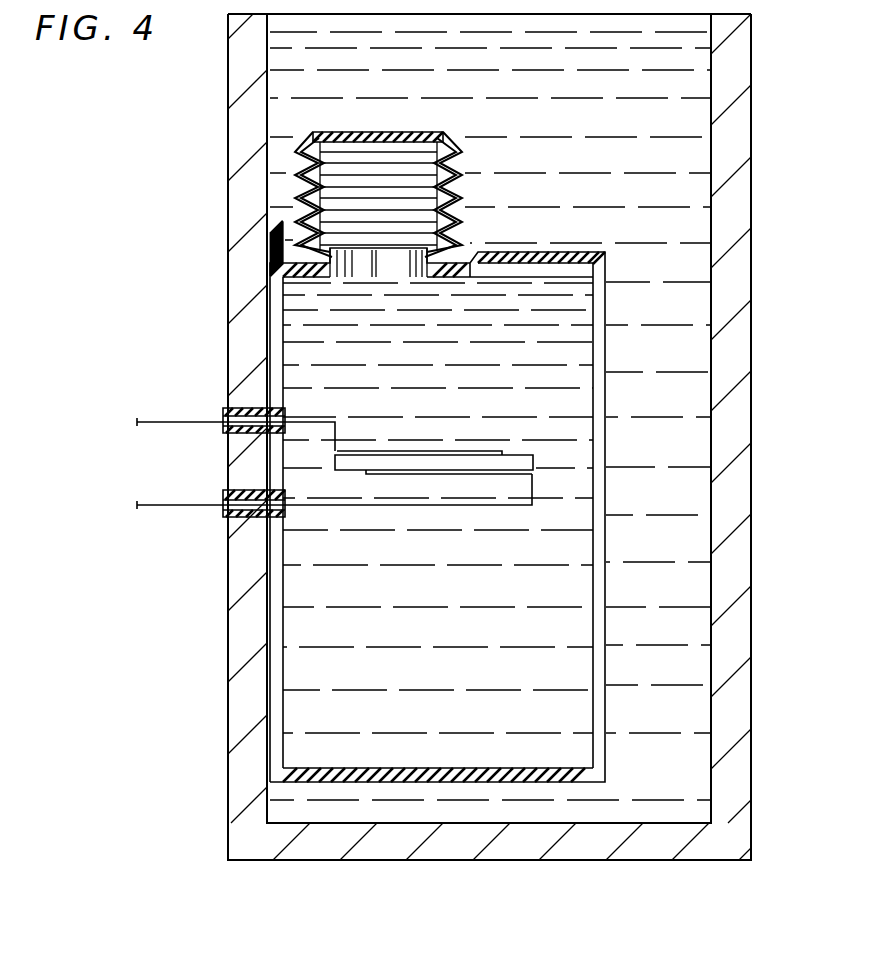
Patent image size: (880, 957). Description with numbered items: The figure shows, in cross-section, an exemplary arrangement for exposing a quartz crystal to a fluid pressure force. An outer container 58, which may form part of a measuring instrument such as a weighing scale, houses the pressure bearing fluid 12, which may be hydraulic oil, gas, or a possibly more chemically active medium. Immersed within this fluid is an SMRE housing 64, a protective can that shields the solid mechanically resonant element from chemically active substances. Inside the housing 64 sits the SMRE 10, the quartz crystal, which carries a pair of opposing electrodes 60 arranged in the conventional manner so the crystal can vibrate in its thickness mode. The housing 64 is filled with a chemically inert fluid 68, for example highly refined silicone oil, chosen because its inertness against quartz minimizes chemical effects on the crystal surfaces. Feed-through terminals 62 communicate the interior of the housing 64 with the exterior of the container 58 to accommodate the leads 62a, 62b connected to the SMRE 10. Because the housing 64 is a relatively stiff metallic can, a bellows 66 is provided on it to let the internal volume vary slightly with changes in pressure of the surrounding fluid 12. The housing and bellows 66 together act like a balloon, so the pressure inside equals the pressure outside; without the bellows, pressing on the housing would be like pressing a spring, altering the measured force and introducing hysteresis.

The SMRE 10 is at (513, 462).
The pressure bearing fluid 12 is at (683, 448).
The container 58 is at (742, 665).
The electrodes 60 is at (393, 452).
The feed-through terminals 62 is at (225, 487).
The lead 62a is at (165, 403).
The lead 62b is at (158, 507).
The SMRE housing 64 is at (607, 541).
The bellows 66 is at (485, 150).
The chemically inert fluid 68 is at (300, 703).